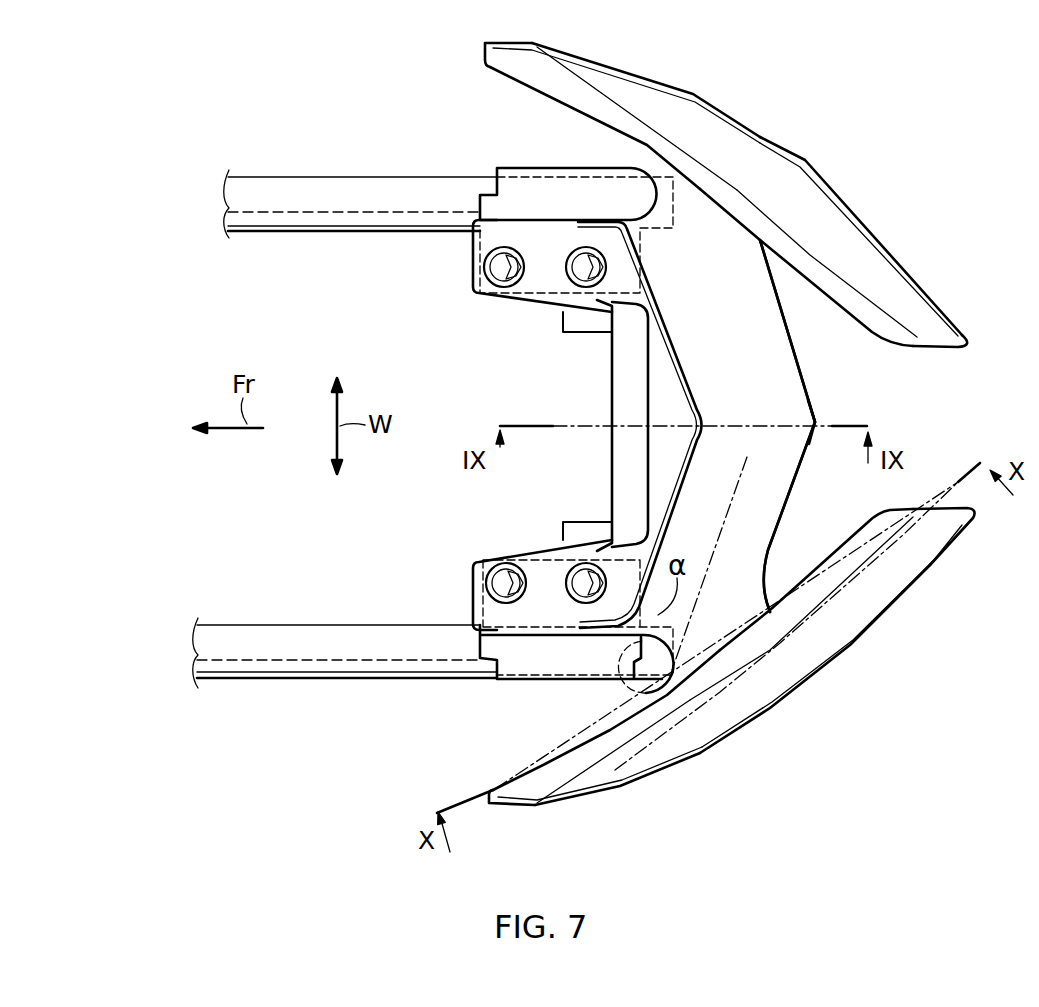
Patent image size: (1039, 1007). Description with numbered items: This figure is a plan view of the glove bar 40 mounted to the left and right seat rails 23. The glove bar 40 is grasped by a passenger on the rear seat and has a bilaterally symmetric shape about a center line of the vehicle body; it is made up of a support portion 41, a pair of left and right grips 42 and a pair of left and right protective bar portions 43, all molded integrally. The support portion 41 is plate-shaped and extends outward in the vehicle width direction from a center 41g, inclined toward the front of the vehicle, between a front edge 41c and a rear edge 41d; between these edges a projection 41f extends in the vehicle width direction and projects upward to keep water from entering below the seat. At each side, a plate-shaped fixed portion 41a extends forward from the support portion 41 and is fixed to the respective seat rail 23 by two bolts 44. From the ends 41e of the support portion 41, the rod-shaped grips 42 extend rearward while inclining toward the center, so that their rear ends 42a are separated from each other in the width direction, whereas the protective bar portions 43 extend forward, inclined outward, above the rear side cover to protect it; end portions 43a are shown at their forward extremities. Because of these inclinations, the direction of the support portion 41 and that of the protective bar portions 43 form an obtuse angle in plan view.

The seat rail 23 is at (397, 180).
The glove bar 40 is at (838, 154).
The support portion 41 is at (777, 290).
The fixed portion 41a is at (473, 272).
The front edge 41c is at (612, 460).
The rear edge 41d is at (800, 367).
The end of the support portion 41e is at (710, 217).
The projection 41f is at (678, 347).
The center in width direction 41g is at (818, 420).
The grip 42 is at (913, 293).
The rear end of the grip 42a is at (945, 346).
The protective bar portion 43 is at (607, 77).
The arm end portion 43a is at (486, 48).
The bolt 44 is at (500, 272).